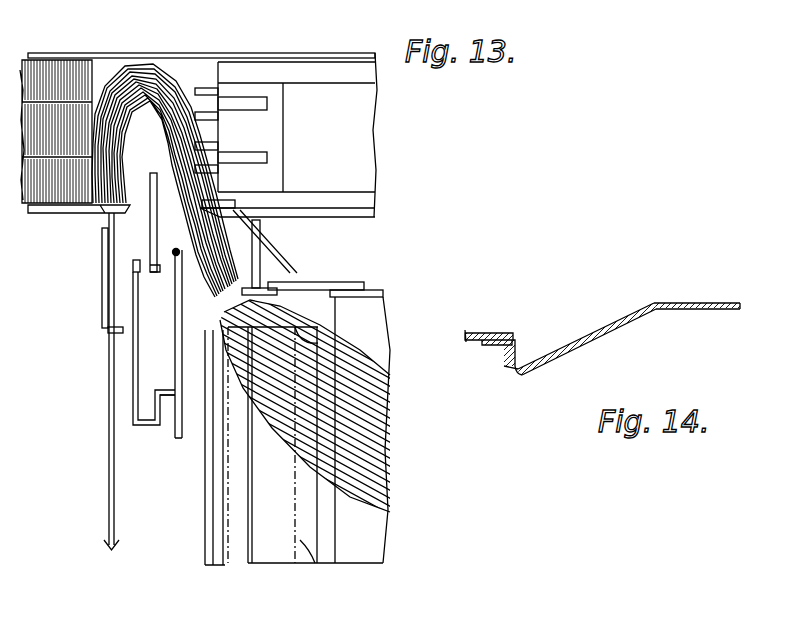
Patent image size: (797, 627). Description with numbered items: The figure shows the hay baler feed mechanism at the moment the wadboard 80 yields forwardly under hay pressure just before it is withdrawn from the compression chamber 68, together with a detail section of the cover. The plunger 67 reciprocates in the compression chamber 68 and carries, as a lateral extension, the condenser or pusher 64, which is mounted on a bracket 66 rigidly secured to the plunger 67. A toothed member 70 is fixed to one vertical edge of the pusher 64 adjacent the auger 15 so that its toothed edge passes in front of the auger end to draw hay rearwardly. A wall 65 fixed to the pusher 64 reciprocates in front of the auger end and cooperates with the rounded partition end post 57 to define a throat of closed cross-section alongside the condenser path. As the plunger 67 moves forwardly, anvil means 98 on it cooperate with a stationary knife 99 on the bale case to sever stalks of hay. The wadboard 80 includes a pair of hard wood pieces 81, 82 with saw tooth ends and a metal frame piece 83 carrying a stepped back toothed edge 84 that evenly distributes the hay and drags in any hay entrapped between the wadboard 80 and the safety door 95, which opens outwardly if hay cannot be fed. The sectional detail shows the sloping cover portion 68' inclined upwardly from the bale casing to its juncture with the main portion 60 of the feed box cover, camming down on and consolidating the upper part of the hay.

In FIG. 13, the compression chamber 68 is at (201, 45).
In FIG. 13, the plunger 67 is at (213, 82).
In FIG. 13, the anvil means 98 is at (230, 200).
In FIG. 13, the condenser or pusher 64 is at (260, 250).
In FIG. 13, the bracket 66 is at (278, 262).
In FIG. 13, the toothed member 70 is at (265, 286).
In FIG. 13, the wall 65 is at (370, 292).
In FIG. 13, the rounded partition end post 57 is at (190, 343).
In FIG. 13, the auger 15 is at (310, 560).
In FIG. 13, the stationary knife 99 is at (100, 214).
In FIG. 13, the metal frame piece 83 is at (133, 398).
In FIG. 13, the safety door 95 is at (102, 252).
In FIG. 13, the hard wood piece 82 is at (150, 233).
In FIG. 13, the stepped back toothed edge 84 is at (133, 266).
In FIG. 13, the hard wood piece 81 is at (175, 380).
In FIG. 13, the wadboard 80 is at (169, 430).
In FIG. 14, the sloping cover portion 68' is at (560, 339).
In FIG. 14, the main portion of the feed box cover 60 is at (712, 304).